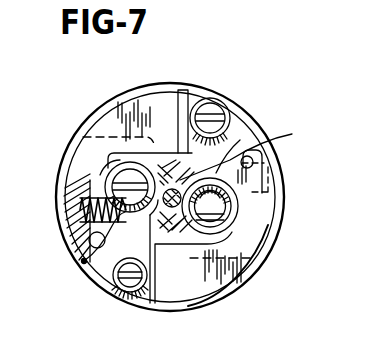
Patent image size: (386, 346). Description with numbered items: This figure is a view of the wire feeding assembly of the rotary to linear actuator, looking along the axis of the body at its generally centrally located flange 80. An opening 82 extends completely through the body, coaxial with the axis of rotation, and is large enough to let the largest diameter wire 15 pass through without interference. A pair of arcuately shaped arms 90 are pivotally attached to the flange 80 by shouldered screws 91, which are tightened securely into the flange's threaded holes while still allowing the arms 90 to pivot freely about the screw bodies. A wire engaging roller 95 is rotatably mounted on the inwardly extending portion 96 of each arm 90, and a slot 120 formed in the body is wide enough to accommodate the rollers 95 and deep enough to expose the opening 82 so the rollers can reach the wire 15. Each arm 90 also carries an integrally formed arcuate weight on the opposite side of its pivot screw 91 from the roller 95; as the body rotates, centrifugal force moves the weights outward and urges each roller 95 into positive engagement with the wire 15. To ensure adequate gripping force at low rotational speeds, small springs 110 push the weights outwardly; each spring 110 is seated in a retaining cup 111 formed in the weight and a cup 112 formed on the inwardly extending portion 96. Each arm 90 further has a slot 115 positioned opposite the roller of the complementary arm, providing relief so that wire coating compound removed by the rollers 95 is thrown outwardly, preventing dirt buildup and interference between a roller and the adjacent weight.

The wire 15 is at (176, 158).
The flange 80 is at (74, 140).
The opening 82 is at (173, 243).
The arcuately shaped arm 90 is at (127, 98).
The screw 91 is at (210, 108).
The wire engaging roller 95 is at (115, 163).
The inwardly extending portion 96 is at (240, 140).
The spring 110 is at (72, 216).
The retaining cup 111 is at (62, 160).
The cup 112 is at (84, 261).
The slot 115 is at (284, 210).
The slot 120 is at (253, 150).